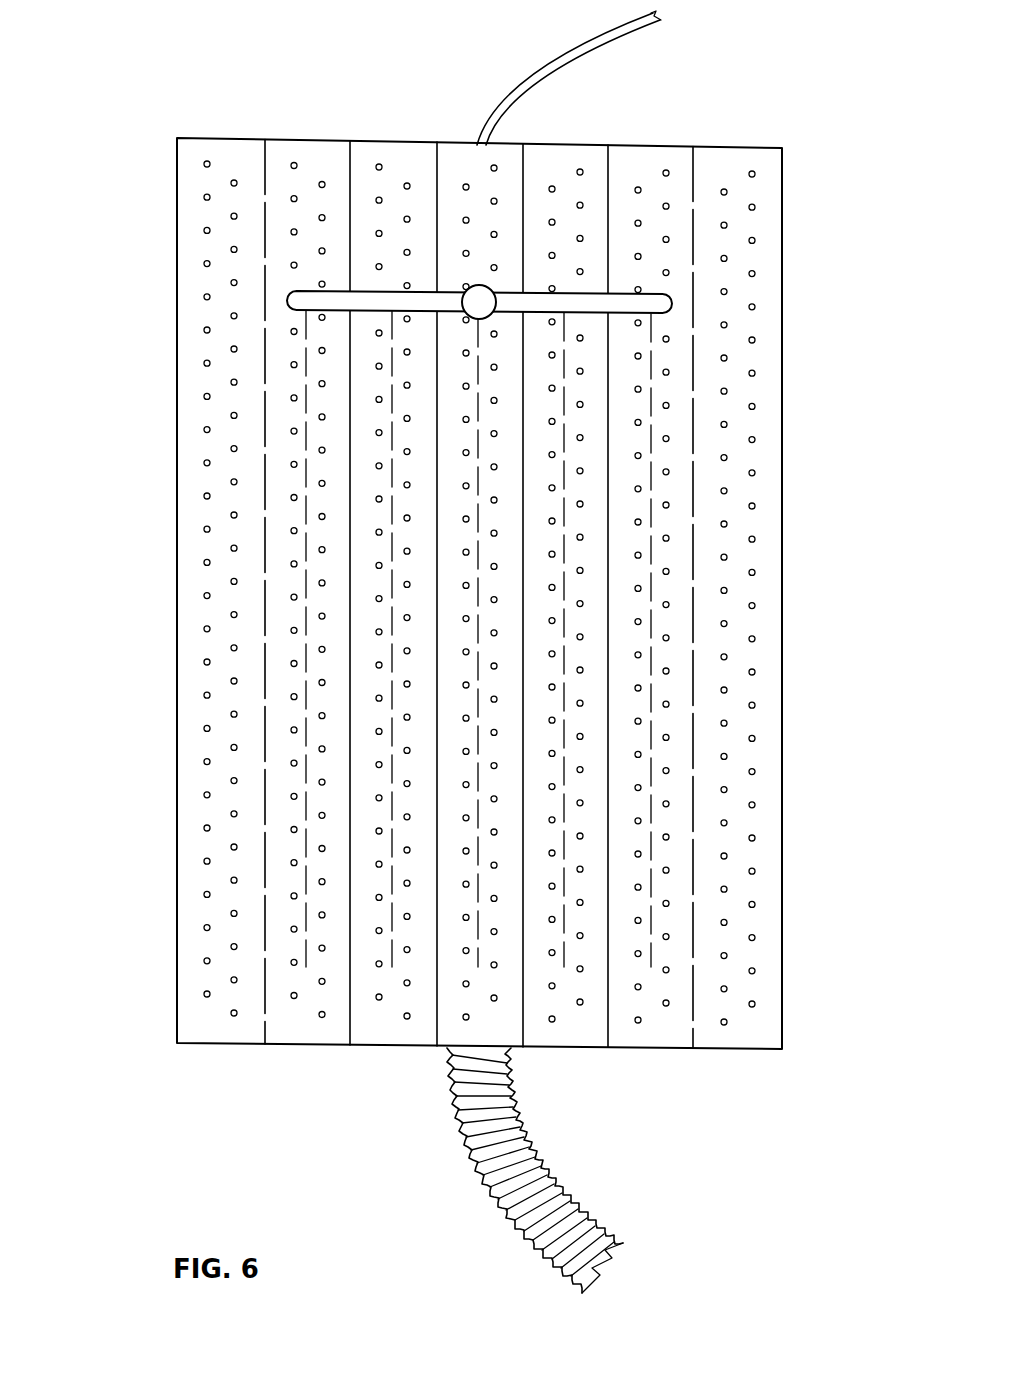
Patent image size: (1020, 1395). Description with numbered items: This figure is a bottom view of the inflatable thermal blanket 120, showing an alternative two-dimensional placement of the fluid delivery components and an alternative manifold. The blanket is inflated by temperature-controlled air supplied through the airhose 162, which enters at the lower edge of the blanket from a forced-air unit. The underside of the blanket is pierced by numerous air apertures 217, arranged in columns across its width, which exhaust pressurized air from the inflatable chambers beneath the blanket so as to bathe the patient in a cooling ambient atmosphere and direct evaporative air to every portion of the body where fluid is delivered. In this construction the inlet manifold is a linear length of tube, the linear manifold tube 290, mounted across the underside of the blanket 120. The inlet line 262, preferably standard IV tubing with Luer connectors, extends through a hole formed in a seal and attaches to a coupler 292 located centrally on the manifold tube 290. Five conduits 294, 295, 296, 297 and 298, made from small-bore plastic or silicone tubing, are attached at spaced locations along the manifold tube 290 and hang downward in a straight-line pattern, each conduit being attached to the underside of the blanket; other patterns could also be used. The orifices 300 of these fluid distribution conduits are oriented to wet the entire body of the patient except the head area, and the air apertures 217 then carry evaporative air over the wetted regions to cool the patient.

The inflatable thermal blanket 120 is at (177, 95).
The airhose 162 is at (522, 1237).
The apertures 217 is at (235, 383).
The inlet line 262 is at (607, 27).
The linear manifold tube 290 is at (342, 292).
The coupler 292 is at (468, 288).
The conduit 294 is at (306, 967).
The conduit 295 is at (392, 967).
The conduit 296 is at (478, 967).
The conduit 297 is at (564, 967).
The conduit 298 is at (651, 967).
The orifices 300 is at (306, 887).